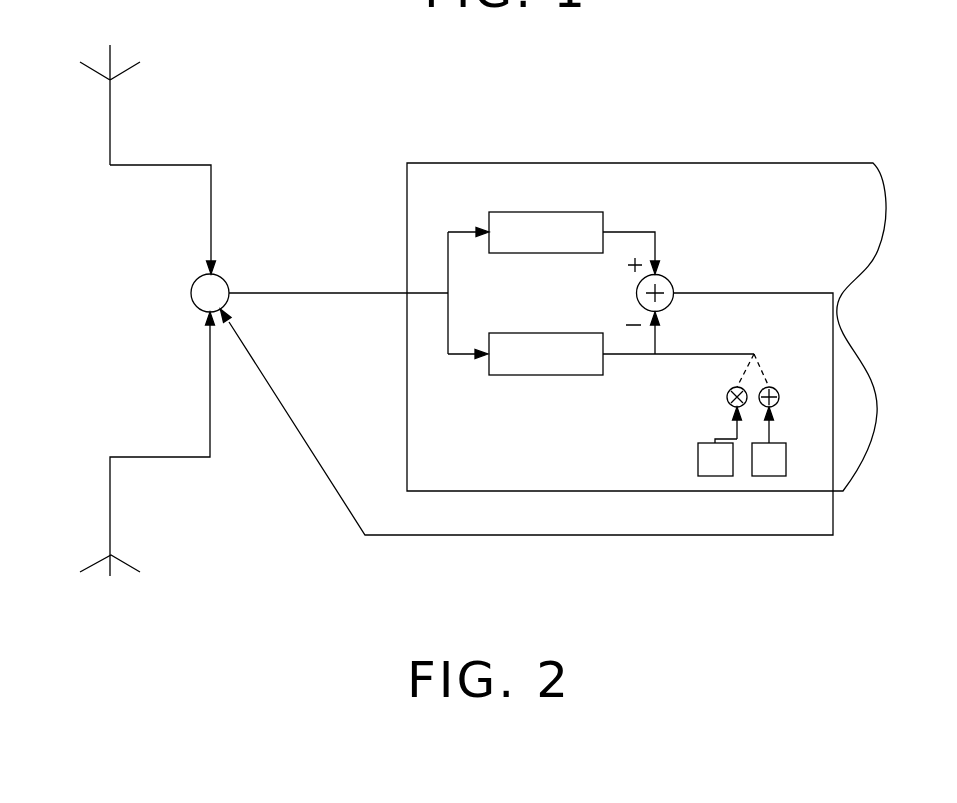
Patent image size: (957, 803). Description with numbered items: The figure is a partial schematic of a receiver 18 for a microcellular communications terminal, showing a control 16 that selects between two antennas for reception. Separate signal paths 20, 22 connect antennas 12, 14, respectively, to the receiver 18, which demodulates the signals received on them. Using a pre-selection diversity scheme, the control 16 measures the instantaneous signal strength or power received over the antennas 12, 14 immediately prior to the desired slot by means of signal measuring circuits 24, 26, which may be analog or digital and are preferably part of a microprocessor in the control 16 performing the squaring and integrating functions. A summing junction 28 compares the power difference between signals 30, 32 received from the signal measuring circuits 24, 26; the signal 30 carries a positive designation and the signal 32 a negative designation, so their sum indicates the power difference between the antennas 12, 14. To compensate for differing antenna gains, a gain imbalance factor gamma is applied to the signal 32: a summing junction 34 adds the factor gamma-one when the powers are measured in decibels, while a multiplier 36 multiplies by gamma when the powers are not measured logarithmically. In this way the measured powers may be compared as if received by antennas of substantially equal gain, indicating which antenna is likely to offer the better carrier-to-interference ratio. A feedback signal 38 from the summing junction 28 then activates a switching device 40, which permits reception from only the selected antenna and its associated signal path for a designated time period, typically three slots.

The antenna 12 is at (125, 45).
The antenna 14 is at (115, 578).
The control 16 is at (475, 163).
The receiver 18 is at (712, 145).
The signal path 20 is at (172, 165).
The signal path 22 is at (148, 458).
The signal measuring circuit 24 is at (562, 253).
The signal measuring circuit 26 is at (562, 375).
The summing junction 28 is at (662, 277).
The signal 30 is at (625, 232).
The signal 32 is at (625, 354).
The summing junction 34 is at (777, 388).
The multiplier 36 is at (727, 394).
The feedback signal 38 is at (760, 293).
The switching device 40 is at (218, 277).